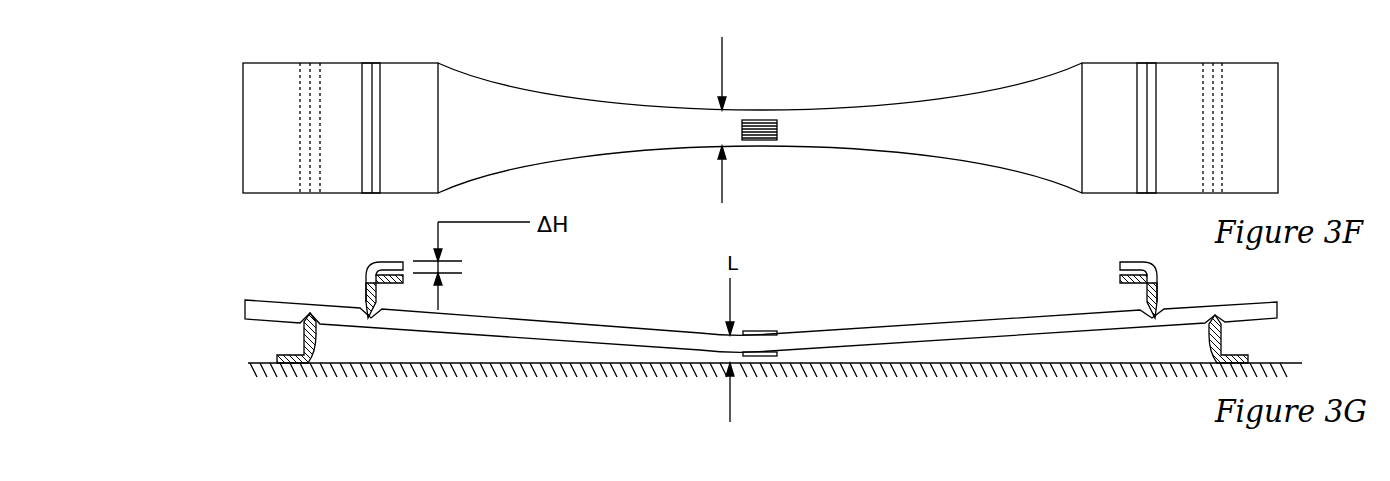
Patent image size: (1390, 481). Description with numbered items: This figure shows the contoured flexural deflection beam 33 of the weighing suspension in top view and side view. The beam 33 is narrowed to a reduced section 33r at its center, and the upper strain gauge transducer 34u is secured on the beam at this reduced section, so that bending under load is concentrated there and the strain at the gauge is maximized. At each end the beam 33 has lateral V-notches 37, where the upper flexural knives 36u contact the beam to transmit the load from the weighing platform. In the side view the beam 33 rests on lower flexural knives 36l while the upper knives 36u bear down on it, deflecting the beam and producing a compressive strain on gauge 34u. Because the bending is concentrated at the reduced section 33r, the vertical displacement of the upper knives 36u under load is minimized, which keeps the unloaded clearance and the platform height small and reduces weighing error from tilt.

In FIG. 3F, the deflection beam 33 is at (273, 131).
In FIG. 3G, the deflection beam 33 is at (255, 307).
In FIG. 3F, the reduced section 33r is at (727, 108).
In FIG. 3F, the upper strain gauge transducer 34u is at (768, 120).
In FIG. 3G, the upper strain gauge transducer 34u is at (767, 332).
In FIG. 3F, the lateral V-notch 37 is at (1147, 102).
In FIG. 3G, the upper flexural knife 36u is at (1107, 280).
In FIG. 3G, the lower flexural knife 36l is at (1217, 335).